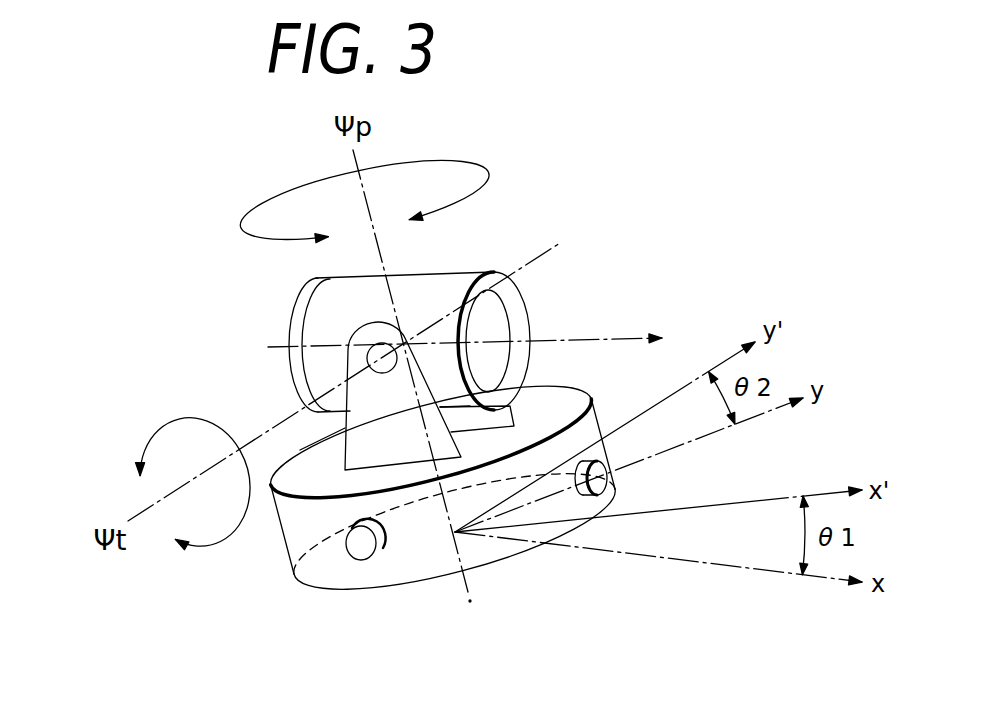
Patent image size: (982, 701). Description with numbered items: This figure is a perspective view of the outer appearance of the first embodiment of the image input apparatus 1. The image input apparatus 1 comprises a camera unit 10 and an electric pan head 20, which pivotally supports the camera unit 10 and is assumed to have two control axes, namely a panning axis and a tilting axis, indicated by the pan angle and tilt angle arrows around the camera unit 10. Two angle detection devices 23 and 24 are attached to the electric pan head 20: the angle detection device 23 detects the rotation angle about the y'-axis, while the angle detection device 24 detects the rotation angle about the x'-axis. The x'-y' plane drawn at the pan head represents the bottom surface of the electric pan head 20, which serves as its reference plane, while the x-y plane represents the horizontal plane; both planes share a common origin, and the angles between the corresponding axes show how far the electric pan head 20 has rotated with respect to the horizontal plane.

The image input apparatus 1 is at (665, 291).
The camera unit 10 is at (526, 302).
The electric pan head 20 is at (523, 548).
The angle detection device 23 is at (372, 562).
The angle detection device 24 is at (607, 478).